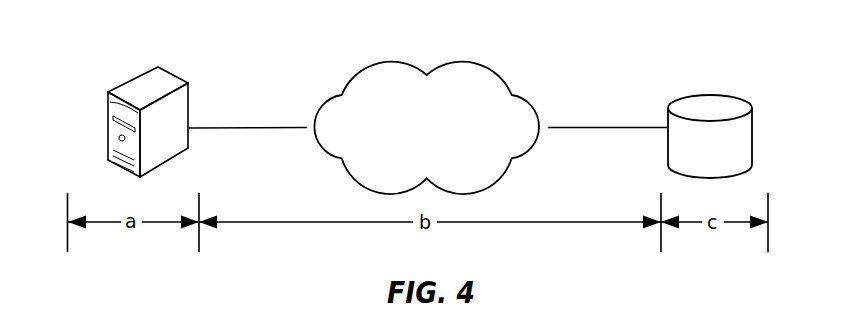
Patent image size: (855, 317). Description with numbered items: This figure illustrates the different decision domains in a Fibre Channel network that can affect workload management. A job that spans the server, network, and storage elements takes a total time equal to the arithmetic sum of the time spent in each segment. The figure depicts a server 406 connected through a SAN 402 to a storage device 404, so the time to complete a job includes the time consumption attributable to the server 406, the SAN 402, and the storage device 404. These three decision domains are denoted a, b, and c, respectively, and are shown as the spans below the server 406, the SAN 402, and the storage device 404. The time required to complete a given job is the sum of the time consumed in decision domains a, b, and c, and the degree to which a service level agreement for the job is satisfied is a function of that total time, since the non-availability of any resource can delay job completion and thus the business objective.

The SAN 402 is at (426, 128).
The storage device 404 is at (710, 93).
The server 406 is at (158, 67).